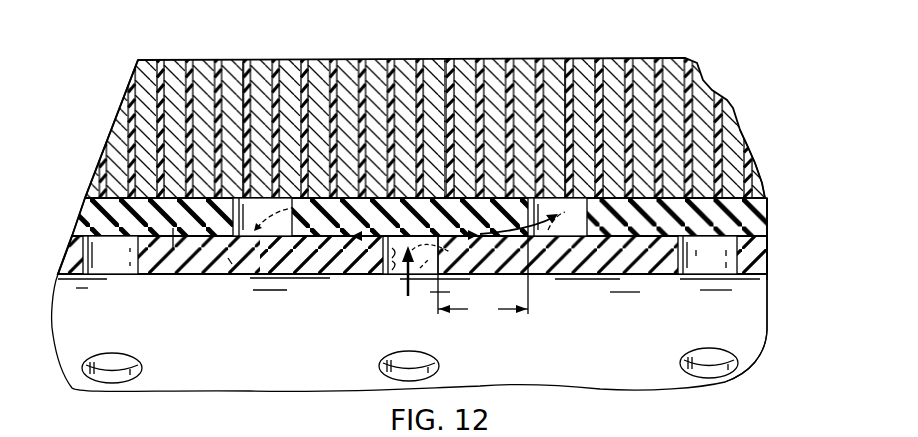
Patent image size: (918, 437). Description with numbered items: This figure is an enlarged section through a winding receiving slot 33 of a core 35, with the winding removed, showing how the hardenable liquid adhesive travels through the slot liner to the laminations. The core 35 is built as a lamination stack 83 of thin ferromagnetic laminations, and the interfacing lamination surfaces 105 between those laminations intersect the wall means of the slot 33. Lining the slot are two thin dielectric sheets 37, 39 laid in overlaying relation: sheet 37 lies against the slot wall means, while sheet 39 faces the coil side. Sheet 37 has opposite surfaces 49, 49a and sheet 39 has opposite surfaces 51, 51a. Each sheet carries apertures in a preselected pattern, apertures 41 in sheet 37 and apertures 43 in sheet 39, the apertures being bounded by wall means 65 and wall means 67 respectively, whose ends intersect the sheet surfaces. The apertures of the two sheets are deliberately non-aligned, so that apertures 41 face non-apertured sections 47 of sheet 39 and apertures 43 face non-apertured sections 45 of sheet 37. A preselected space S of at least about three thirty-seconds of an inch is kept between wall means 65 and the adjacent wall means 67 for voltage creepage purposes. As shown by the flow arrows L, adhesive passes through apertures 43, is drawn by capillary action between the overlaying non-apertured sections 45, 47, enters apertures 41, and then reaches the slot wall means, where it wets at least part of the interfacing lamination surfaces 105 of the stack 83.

The core 35 is at (779, 89).
The lamination stack 83 is at (675, 58).
The interfacing lamination surfaces 105 is at (247, 64).
The sheet 37 is at (756, 210).
The sheet 39 is at (768, 256).
The winding receiving slot 33 is at (736, 185).
The opposite surface 51 is at (762, 212).
The opposite surface 51a is at (769, 290).
The opposite surface 49 is at (89, 197).
The opposite surface 49a is at (77, 235).
The apertures 41 is at (283, 216).
The apertures 43 is at (138, 256).
The non-apertured sections 45 is at (173, 228).
The non-apertured sections 47 is at (230, 262).
The wall means 65 is at (523, 214).
The wall means 67 is at (440, 253).
The liquid adhesive material flow arrows L is at (404, 291).
The preselected space S is at (483, 277).